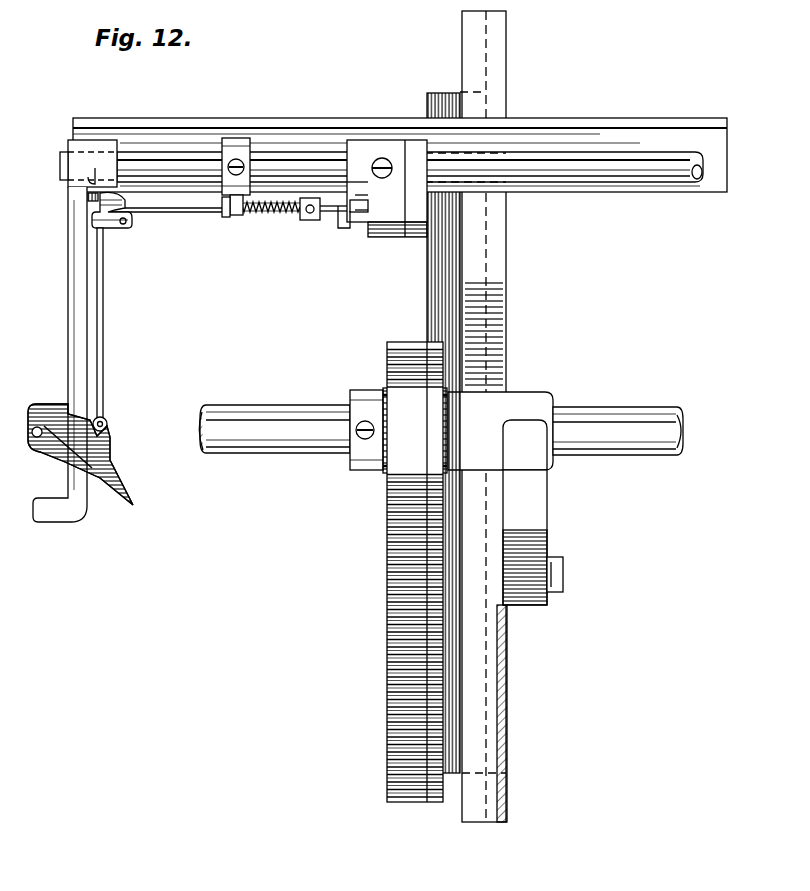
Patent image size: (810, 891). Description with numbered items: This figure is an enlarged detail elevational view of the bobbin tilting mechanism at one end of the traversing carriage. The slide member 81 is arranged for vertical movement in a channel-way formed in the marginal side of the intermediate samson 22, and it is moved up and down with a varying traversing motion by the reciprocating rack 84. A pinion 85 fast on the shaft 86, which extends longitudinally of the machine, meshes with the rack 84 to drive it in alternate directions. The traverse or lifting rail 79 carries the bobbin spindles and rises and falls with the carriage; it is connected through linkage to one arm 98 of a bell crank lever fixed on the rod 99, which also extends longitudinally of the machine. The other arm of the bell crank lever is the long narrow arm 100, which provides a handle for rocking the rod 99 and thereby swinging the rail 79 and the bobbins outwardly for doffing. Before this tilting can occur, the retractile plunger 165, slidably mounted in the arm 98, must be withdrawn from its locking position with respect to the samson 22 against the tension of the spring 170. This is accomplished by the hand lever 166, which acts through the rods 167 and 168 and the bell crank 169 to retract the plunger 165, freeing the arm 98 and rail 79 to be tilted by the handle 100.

The intermediate samson 22 is at (506, 260).
The traverse or lifting rail 79 is at (572, 121).
The slide member 81 is at (438, 93).
The rack 84 is at (388, 592).
The pinion 85 is at (397, 464).
The shaft 86 is at (264, 448).
The arm of bell crank lever 98 is at (390, 228).
The rod 99 is at (166, 157).
The arm 100 is at (76, 277).
The retractile plunger 165 is at (352, 228).
The hand lever 166 is at (118, 466).
The rod 167 is at (104, 338).
The rod 168 is at (188, 214).
The bell crank 169 is at (124, 225).
The spring 170 is at (280, 216).